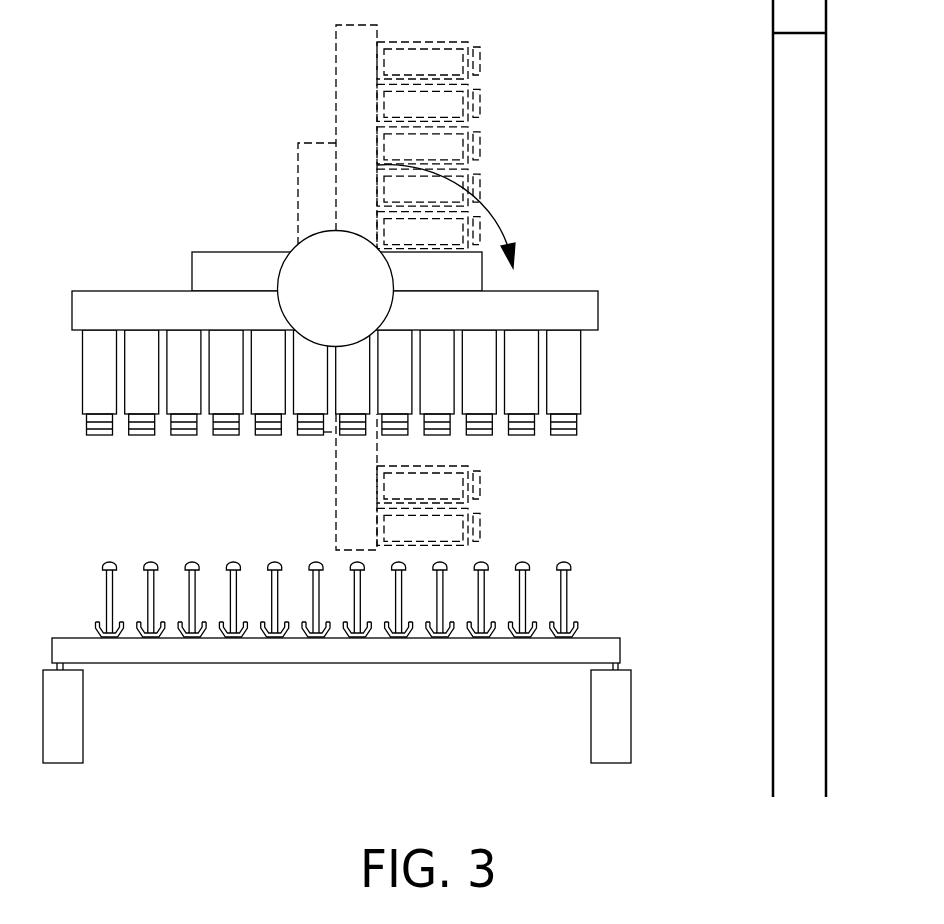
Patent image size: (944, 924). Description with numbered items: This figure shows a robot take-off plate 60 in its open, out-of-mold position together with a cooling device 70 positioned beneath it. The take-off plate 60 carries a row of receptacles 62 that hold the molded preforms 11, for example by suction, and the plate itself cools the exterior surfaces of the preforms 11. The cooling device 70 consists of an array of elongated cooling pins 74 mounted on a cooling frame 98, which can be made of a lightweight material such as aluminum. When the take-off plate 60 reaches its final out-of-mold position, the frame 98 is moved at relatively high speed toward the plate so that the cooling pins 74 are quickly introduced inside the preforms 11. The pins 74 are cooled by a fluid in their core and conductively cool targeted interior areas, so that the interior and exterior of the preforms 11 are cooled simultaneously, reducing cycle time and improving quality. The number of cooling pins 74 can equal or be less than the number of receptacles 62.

The take-off plate 60 is at (570, 291).
The receptacles 62 is at (527, 367).
The preforms 11 is at (140, 437).
The cooling device 70 is at (339, 640).
The cooling pins 74 is at (480, 562).
The cooling frame 98 is at (440, 648).